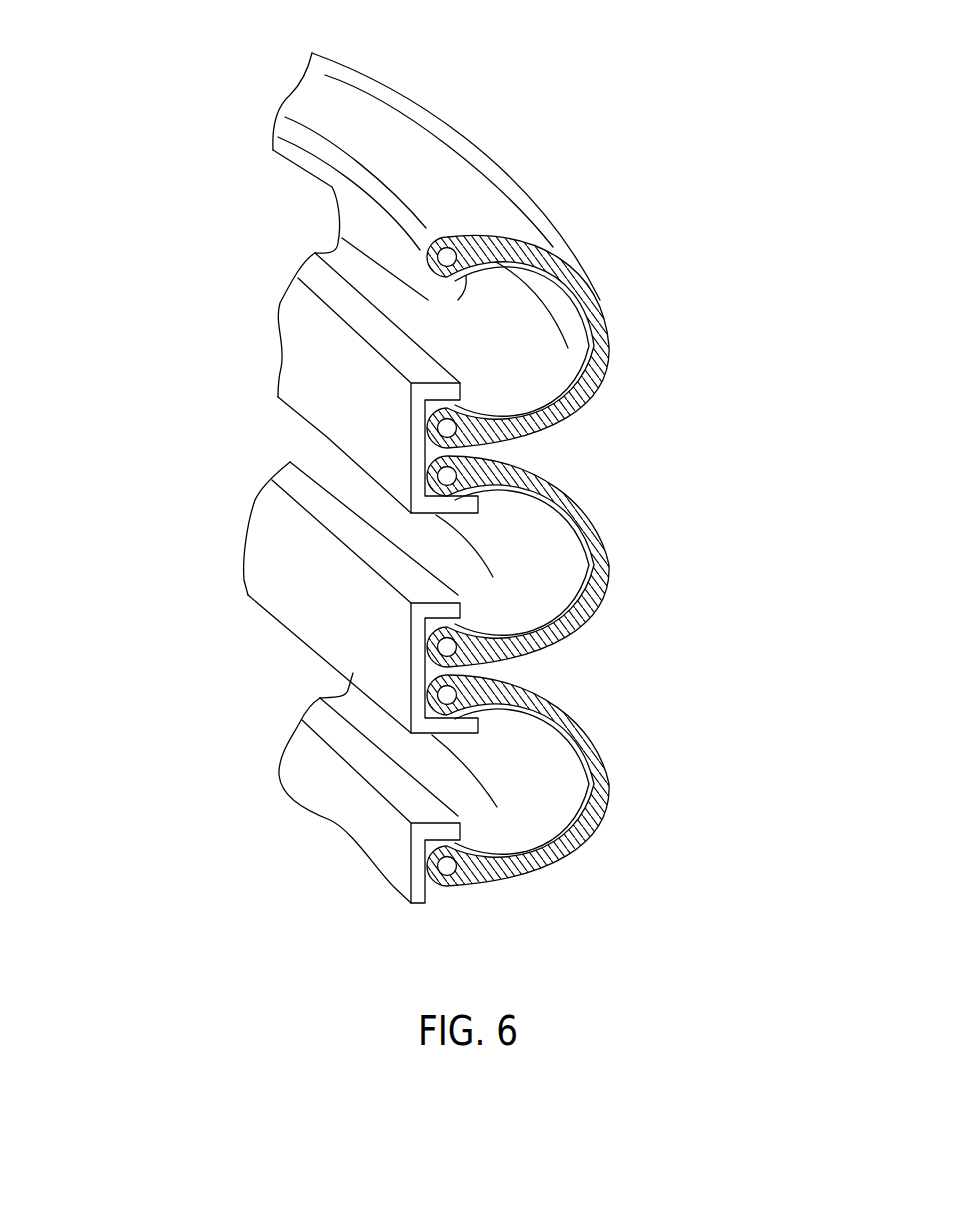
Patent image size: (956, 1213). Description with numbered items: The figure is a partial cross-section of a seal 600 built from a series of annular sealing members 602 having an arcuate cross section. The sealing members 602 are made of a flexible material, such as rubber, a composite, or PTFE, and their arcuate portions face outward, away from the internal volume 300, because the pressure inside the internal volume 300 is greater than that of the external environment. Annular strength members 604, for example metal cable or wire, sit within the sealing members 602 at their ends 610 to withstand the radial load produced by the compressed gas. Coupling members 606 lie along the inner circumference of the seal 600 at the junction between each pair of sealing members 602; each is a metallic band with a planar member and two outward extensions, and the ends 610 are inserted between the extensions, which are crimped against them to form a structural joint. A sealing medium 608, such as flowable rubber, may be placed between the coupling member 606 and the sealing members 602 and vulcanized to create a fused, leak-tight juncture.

The seal 600 is at (722, 49).
The internal volume 300 is at (94, 531).
The annular sealing members 602 is at (612, 333).
The annular strength members 604 is at (449, 238).
The coupling members 606 is at (311, 342).
The sealing medium 608 is at (410, 473).
The ends 610 is at (447, 404).